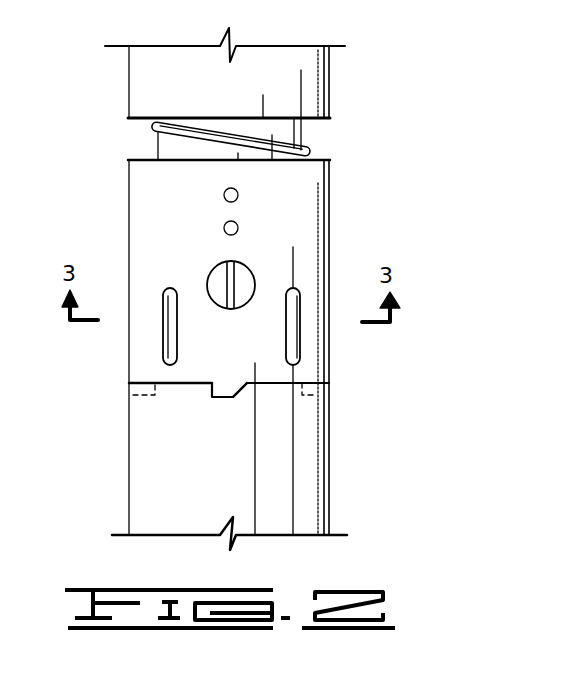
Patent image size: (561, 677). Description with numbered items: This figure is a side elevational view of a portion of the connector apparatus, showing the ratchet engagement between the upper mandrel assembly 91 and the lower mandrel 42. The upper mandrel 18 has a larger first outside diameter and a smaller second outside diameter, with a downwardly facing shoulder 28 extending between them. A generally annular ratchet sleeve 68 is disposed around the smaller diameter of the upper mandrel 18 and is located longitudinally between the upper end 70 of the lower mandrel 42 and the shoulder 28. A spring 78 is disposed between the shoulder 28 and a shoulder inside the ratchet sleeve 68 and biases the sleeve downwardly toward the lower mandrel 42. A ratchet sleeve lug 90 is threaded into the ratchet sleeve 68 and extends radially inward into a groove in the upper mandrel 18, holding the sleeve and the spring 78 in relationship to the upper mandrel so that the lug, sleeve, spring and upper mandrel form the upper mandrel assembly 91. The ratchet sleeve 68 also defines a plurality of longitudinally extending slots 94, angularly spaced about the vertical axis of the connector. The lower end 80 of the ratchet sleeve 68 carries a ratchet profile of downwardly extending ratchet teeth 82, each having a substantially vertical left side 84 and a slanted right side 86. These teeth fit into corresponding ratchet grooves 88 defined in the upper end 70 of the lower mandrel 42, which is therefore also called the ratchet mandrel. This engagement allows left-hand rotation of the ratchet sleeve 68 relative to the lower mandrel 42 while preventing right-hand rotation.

The upper mandrel 18 is at (307, 83).
The upper mandrel assembly 91 is at (242, 289).
The downwardly facing shoulder 28 is at (147, 123).
The spring 78 is at (318, 148).
The ratchet sleeve 68 is at (313, 193).
The ratchet sleeve lug 90 is at (220, 278).
The longitudinally extending slots 94 is at (163, 292).
The substantially vertical left side 84 is at (130, 388).
The ratchet grooves 88 is at (222, 392).
The upper end of lower mandrel 70 is at (298, 382).
The ratchet teeth 82 is at (212, 392).
The slanted right side 86 is at (246, 392).
The lower end of ratchet sleeve 80 is at (283, 382).
The lower mandrel 42 is at (282, 513).